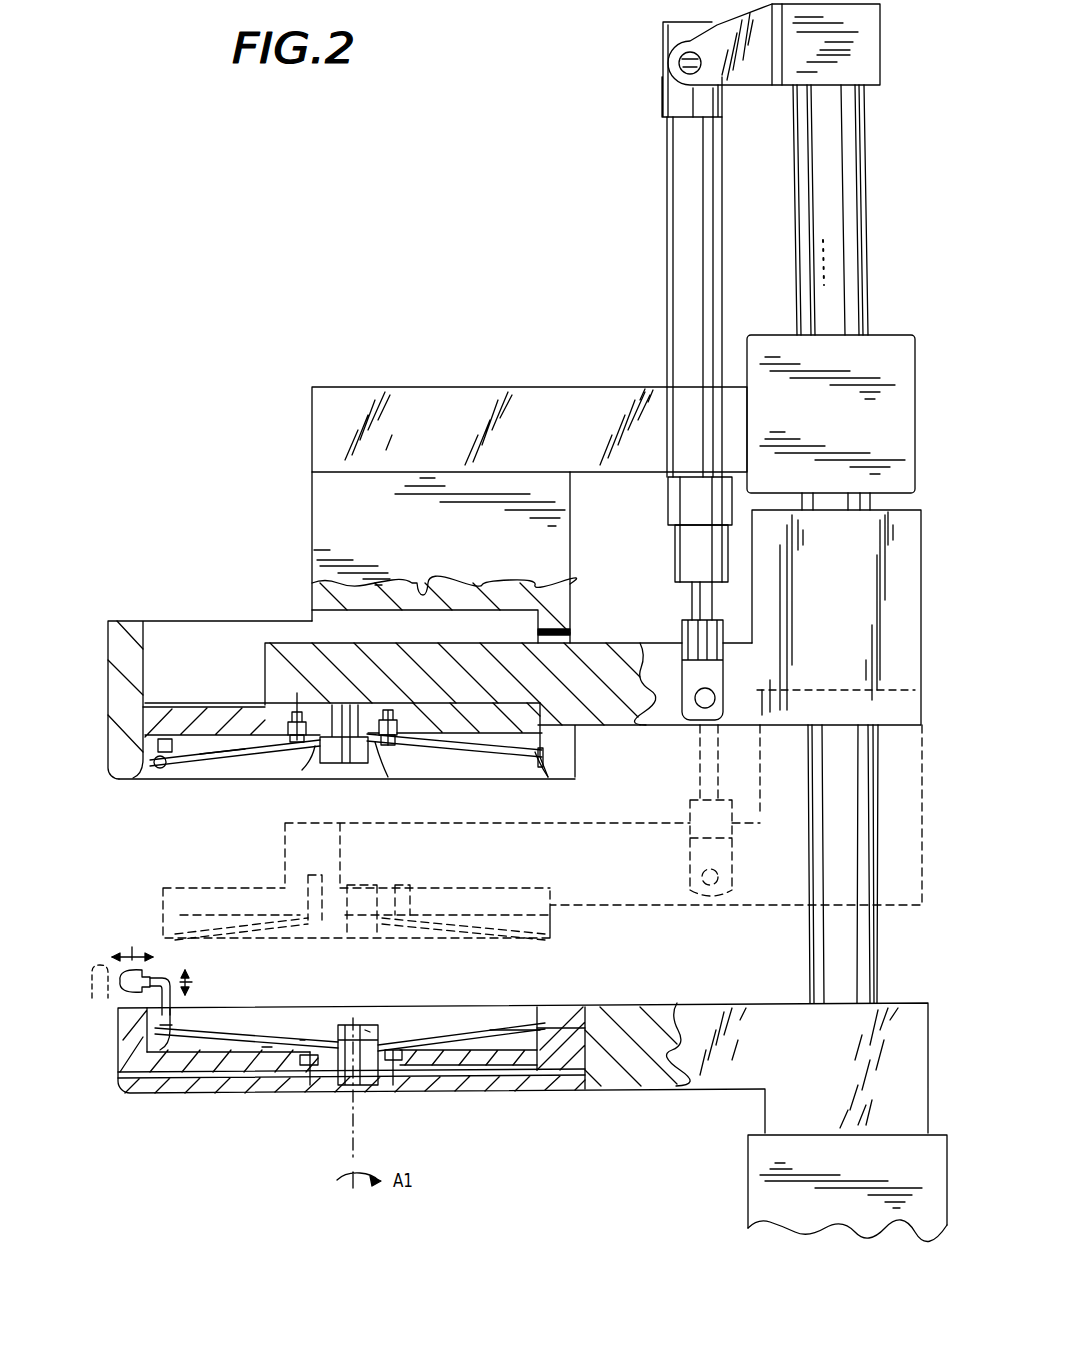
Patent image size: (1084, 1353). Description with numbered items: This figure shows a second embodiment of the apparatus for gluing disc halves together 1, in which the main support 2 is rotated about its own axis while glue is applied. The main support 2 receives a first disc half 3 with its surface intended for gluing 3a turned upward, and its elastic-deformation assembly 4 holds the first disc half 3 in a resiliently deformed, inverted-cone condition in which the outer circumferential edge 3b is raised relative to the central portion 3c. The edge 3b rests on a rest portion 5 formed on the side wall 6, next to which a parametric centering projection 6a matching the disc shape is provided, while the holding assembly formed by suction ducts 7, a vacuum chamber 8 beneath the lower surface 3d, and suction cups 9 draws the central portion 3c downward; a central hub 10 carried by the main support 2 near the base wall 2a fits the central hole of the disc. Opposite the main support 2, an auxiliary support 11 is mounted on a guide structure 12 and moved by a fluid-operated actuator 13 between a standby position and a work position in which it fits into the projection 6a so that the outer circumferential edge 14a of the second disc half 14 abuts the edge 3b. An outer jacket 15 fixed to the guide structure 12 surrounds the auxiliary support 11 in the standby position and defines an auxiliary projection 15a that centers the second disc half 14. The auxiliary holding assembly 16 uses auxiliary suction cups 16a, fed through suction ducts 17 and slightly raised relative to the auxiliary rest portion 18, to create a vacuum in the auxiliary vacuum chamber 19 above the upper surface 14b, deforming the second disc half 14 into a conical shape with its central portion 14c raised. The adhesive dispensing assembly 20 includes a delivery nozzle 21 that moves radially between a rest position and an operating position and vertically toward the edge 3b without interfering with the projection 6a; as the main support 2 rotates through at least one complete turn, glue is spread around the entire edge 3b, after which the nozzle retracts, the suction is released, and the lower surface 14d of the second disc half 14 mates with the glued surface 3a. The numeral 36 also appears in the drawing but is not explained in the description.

The apparatus for gluing disc halves together 1 is at (263, 320).
The main support 2 is at (565, 1090).
The base wall 2a is at (480, 1058).
The first disc half 3 is at (218, 1068).
The surface intended for gluing 3a is at (327, 1050).
The outer circumferential edge 3b is at (297, 1040).
The central portion 3c is at (365, 1035).
The lower surface 3d is at (267, 1050).
The upper surface of lower disk 36 is at (170, 1026).
The elastic-deformation assembly 4 is at (522, 1078).
The rest portion 5 is at (535, 1022).
The side wall 6 is at (570, 1038).
The parametric centering projection 6a is at (557, 1033).
The suction ducts 7 is at (158, 1082).
The vacuum chamber 8 is at (503, 1043).
The suction cups 9 is at (313, 1064).
The central hub 10 is at (387, 1022).
The auxiliary support 11 is at (288, 640).
The guide structure 12 is at (850, 775).
The fluid-operated actuator 13 is at (668, 172).
The second disc half 14 is at (444, 748).
The outer circumferential edge 14a is at (537, 765).
The upper surface 14b is at (225, 735).
The central portion 14c is at (318, 746).
The lower surface 14d is at (243, 752).
The outer jacket 15 is at (112, 769).
The auxiliary projection 15a is at (155, 770).
The auxiliary holding assembly 16 is at (302, 705).
The auxiliary suction cups 16a is at (296, 742).
The suction ducts 17 is at (305, 700).
The auxiliary rest portion 18 is at (172, 706).
The auxiliary vacuum chamber 19 is at (197, 705).
The adhesive dispensing assembly 20 is at (117, 998).
The delivery nozzle 21 is at (105, 962).